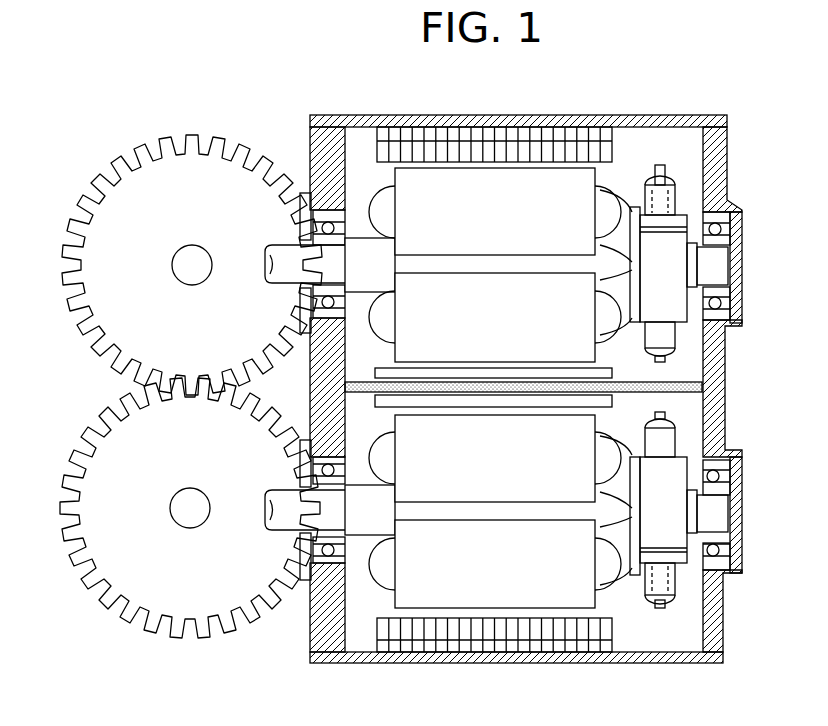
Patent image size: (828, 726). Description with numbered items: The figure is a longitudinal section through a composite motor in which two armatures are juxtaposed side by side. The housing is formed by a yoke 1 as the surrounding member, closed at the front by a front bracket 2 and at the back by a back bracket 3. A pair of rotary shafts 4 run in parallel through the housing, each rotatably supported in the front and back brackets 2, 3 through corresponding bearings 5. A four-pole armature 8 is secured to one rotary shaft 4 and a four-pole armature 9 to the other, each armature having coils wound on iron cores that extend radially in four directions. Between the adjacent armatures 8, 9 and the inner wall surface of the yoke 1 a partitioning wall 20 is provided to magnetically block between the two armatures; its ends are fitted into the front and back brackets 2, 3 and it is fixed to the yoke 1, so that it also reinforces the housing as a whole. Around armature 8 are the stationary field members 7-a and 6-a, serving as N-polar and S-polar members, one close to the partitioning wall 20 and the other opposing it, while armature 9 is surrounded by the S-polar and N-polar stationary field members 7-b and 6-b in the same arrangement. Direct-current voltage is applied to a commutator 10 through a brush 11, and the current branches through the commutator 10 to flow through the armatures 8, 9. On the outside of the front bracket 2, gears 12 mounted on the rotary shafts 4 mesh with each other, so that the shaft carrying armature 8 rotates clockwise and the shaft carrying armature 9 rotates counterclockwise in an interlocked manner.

The yoke 1 is at (663, 117).
The front bracket 2 is at (318, 152).
The back bracket 3 is at (715, 177).
The rotary shaft 4 is at (717, 266).
The bearing 5 is at (719, 476).
The stationary field member 6-a is at (432, 147).
The stationary field member 6-b is at (440, 628).
The stationary field member 7-a is at (612, 378).
The stationary field member 7-b is at (612, 405).
The armature 8 is at (555, 182).
The armature 9 is at (572, 595).
The commutator 10 is at (635, 558).
The brush 11 is at (712, 497).
The gear 12 is at (113, 315).
The partitioning wall 20 is at (698, 389).